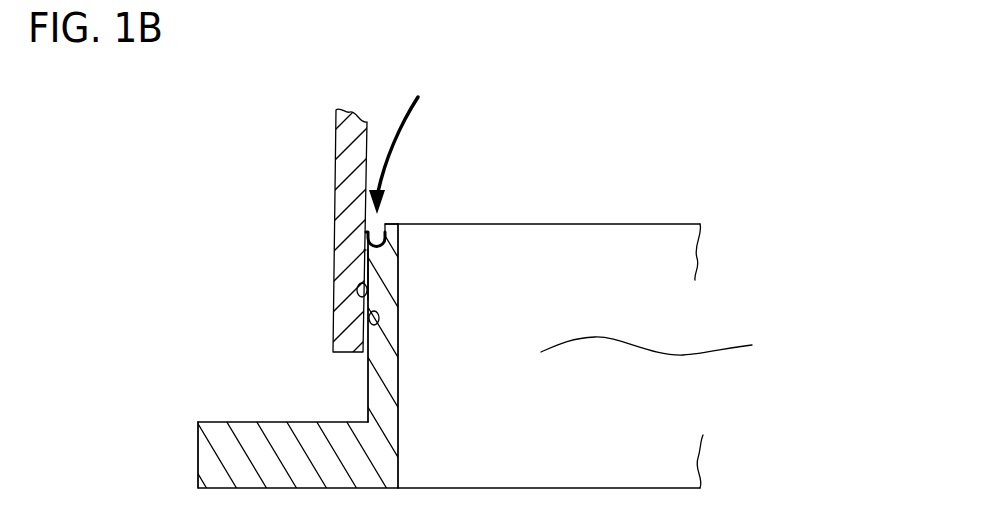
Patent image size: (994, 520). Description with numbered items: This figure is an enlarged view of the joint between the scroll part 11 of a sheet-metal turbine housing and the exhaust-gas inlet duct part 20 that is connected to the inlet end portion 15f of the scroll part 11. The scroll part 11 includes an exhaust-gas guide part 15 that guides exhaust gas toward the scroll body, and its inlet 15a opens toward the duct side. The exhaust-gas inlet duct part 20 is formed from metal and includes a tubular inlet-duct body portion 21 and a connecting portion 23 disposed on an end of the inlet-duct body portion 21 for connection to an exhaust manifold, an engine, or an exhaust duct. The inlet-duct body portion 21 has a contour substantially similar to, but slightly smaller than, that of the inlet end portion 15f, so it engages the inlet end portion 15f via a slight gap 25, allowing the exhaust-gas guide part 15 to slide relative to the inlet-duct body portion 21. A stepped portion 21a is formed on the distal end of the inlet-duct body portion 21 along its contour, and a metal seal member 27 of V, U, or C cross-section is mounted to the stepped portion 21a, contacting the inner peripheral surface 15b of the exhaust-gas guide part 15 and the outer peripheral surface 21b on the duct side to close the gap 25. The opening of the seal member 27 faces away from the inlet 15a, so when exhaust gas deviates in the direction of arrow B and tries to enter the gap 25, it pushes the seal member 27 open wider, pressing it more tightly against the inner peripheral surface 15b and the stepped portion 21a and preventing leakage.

The scroll part 11 is at (310, 220).
The exhaust-gas guide part 15 is at (333, 185).
The inlet 15a is at (803, 356).
The inner peripheral surface 15b is at (375, 318).
The inlet end portion 15f is at (364, 292).
The exhaust-gas inlet duct part 20 is at (427, 311).
The inlet-duct body portion 21 is at (368, 382).
The stepped portion 21a is at (385, 223).
The outer peripheral surface 21b is at (370, 280).
The connecting portion 23 is at (217, 422).
The gap 25 is at (368, 258).
The seal member 27 is at (368, 236).
The arrow B is at (408, 110).